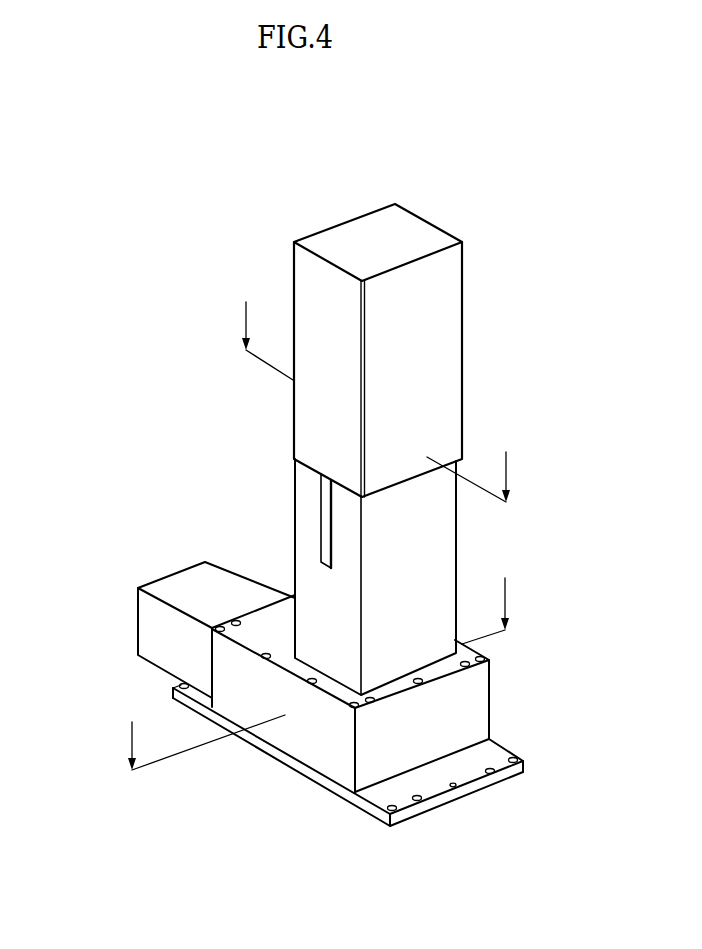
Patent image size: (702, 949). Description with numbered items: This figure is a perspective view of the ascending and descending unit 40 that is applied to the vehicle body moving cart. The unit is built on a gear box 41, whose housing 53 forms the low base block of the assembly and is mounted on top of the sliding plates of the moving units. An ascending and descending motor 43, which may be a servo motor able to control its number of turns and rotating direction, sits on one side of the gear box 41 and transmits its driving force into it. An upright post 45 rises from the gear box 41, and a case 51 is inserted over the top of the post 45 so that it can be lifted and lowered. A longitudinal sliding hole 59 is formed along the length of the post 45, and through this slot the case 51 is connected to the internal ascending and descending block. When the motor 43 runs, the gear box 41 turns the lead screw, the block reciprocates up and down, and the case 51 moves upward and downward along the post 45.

The ascending and descending unit 40 is at (103, 554).
The gear box 41 is at (498, 699).
The ascending and descending motor 43 is at (183, 583).
The post 45 is at (422, 528).
The case 51 is at (442, 335).
The housing 53 is at (407, 732).
The longitudinal sliding hole 59 is at (313, 522).